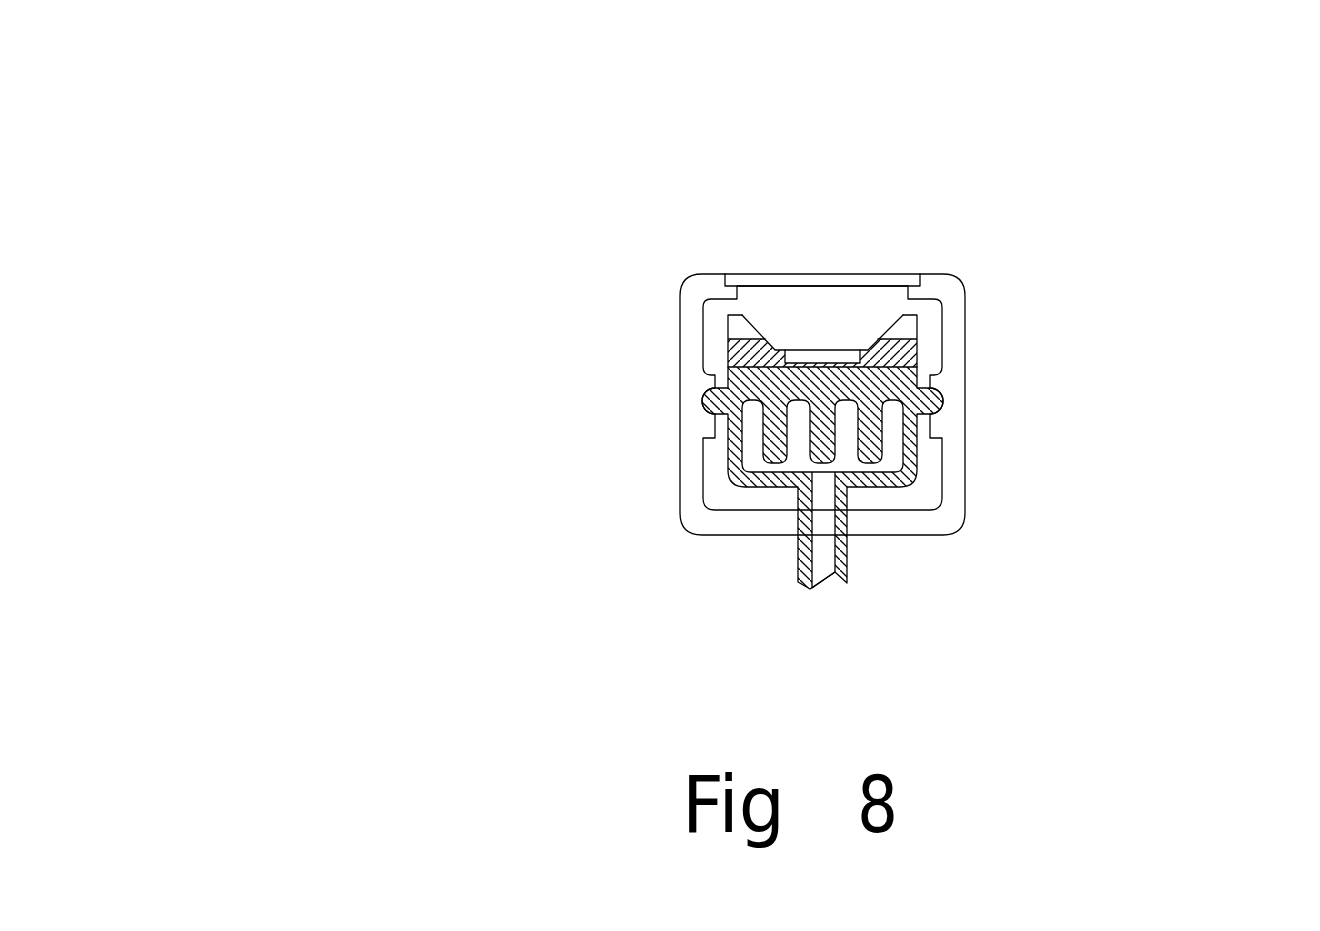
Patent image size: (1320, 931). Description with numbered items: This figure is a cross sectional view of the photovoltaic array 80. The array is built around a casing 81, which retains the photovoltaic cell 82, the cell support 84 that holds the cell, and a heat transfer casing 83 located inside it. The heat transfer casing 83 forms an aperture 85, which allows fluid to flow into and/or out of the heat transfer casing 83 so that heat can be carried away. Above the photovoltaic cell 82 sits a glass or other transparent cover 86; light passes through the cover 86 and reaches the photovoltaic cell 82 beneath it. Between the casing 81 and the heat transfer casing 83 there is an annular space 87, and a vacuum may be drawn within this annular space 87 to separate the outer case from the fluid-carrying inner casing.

The photovoltaic array 80 is at (592, 367).
The casing 81 is at (965, 422).
The photovoltaic cell 82 is at (798, 349).
The heat transfer casing 83 is at (733, 433).
The cell support 84 is at (763, 363).
The aperture 85 is at (892, 438).
The transparent cover 86 is at (876, 272).
The annular space 87 is at (830, 315).